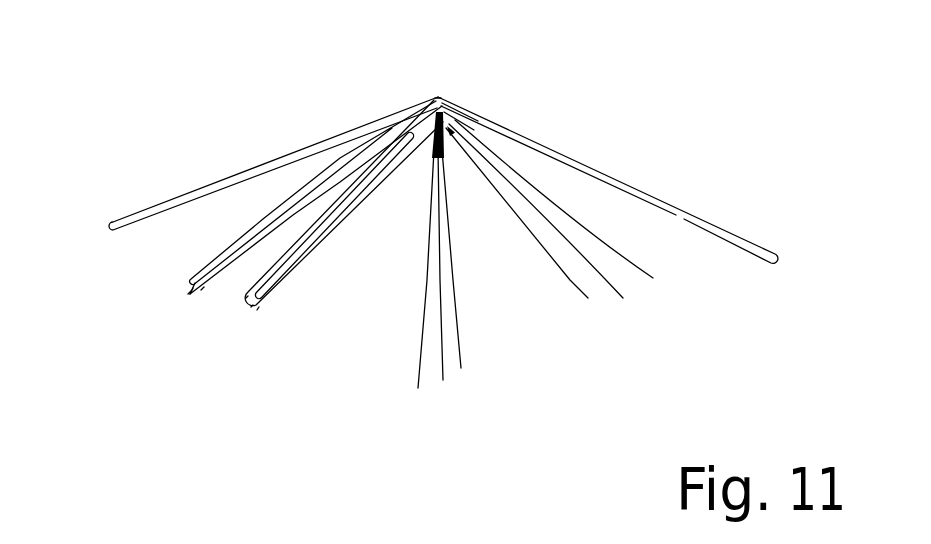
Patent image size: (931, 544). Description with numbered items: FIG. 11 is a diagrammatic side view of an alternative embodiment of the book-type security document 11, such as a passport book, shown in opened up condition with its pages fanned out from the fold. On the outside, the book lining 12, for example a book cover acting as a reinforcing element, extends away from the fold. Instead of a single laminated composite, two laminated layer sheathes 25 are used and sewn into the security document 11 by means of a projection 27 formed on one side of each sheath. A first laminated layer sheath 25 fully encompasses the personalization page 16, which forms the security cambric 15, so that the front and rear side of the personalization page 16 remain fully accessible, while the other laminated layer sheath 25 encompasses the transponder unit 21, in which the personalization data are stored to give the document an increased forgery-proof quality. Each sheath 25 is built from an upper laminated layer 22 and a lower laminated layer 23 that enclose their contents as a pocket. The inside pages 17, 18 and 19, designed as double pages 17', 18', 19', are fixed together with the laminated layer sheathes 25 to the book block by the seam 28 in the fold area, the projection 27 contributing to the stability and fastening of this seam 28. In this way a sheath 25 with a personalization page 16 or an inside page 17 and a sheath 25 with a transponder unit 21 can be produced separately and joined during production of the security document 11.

The security document 11 is at (340, 115).
The book lining 12 is at (687, 214).
The security cambric 15 is at (250, 220).
The personalization page 16 is at (233, 249).
The inside page 17 is at (409, 308).
The inside page 18 is at (456, 311).
The inside page 19 is at (492, 296).
The double page 17' is at (545, 262).
The double page 18' is at (574, 239).
The double page 19' is at (609, 212).
The transponder unit 21 is at (281, 276).
The upper laminated layer 22 is at (191, 283).
The lower laminated layer 23 is at (203, 290).
The laminated layer sheath 25 is at (189, 294).
The projection 27 is at (458, 118).
The seam 28 is at (438, 99).